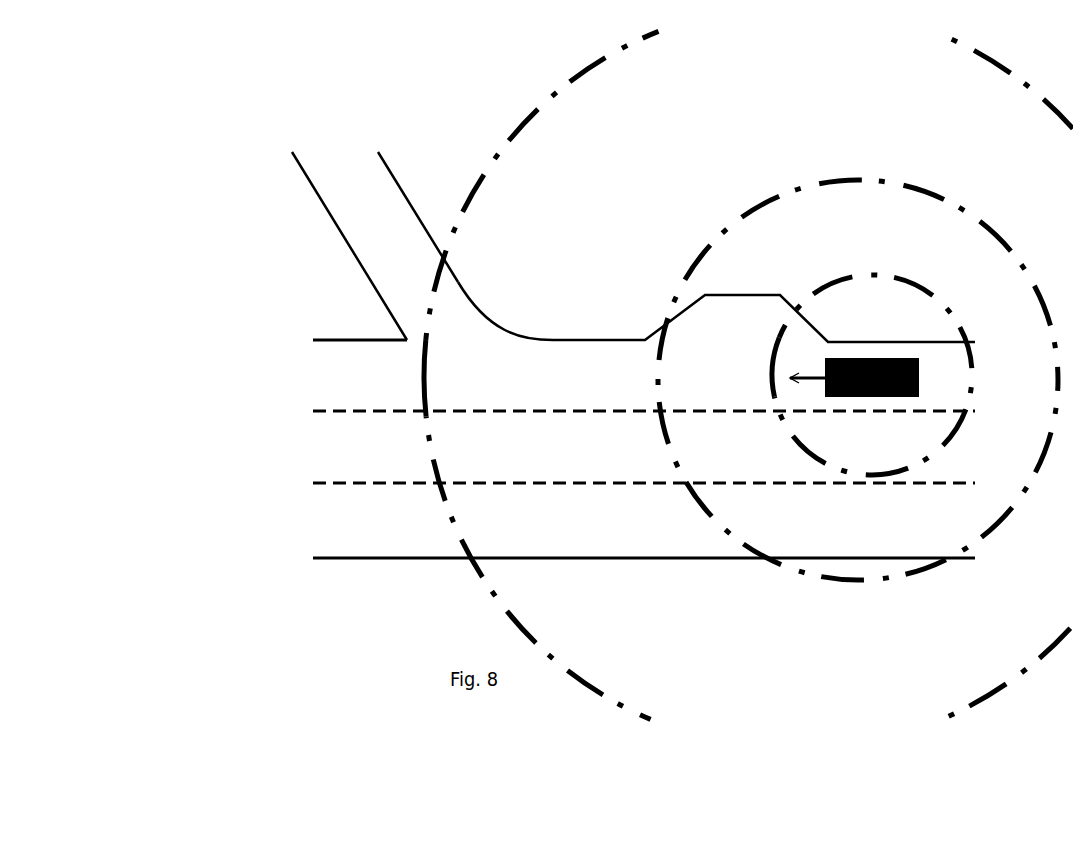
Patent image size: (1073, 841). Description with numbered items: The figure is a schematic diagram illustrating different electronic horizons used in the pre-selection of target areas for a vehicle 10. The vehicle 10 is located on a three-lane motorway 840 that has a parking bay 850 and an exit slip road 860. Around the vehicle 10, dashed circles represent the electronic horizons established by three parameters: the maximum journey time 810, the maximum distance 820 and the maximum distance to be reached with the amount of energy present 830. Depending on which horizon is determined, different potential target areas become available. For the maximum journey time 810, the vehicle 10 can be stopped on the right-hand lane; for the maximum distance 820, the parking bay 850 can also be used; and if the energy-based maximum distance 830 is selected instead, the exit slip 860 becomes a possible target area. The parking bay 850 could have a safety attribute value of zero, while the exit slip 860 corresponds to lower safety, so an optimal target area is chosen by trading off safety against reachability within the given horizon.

The vehicle 10 is at (872, 398).
The maximum journey time 810 is at (875, 278).
The maximum distance 820 is at (728, 543).
The maximum distance to be reached with the amount of energy present 830 is at (440, 510).
The three-lane motorway 840 is at (337, 523).
The parking bay 850 is at (733, 322).
The exit slip road 860 is at (388, 260).